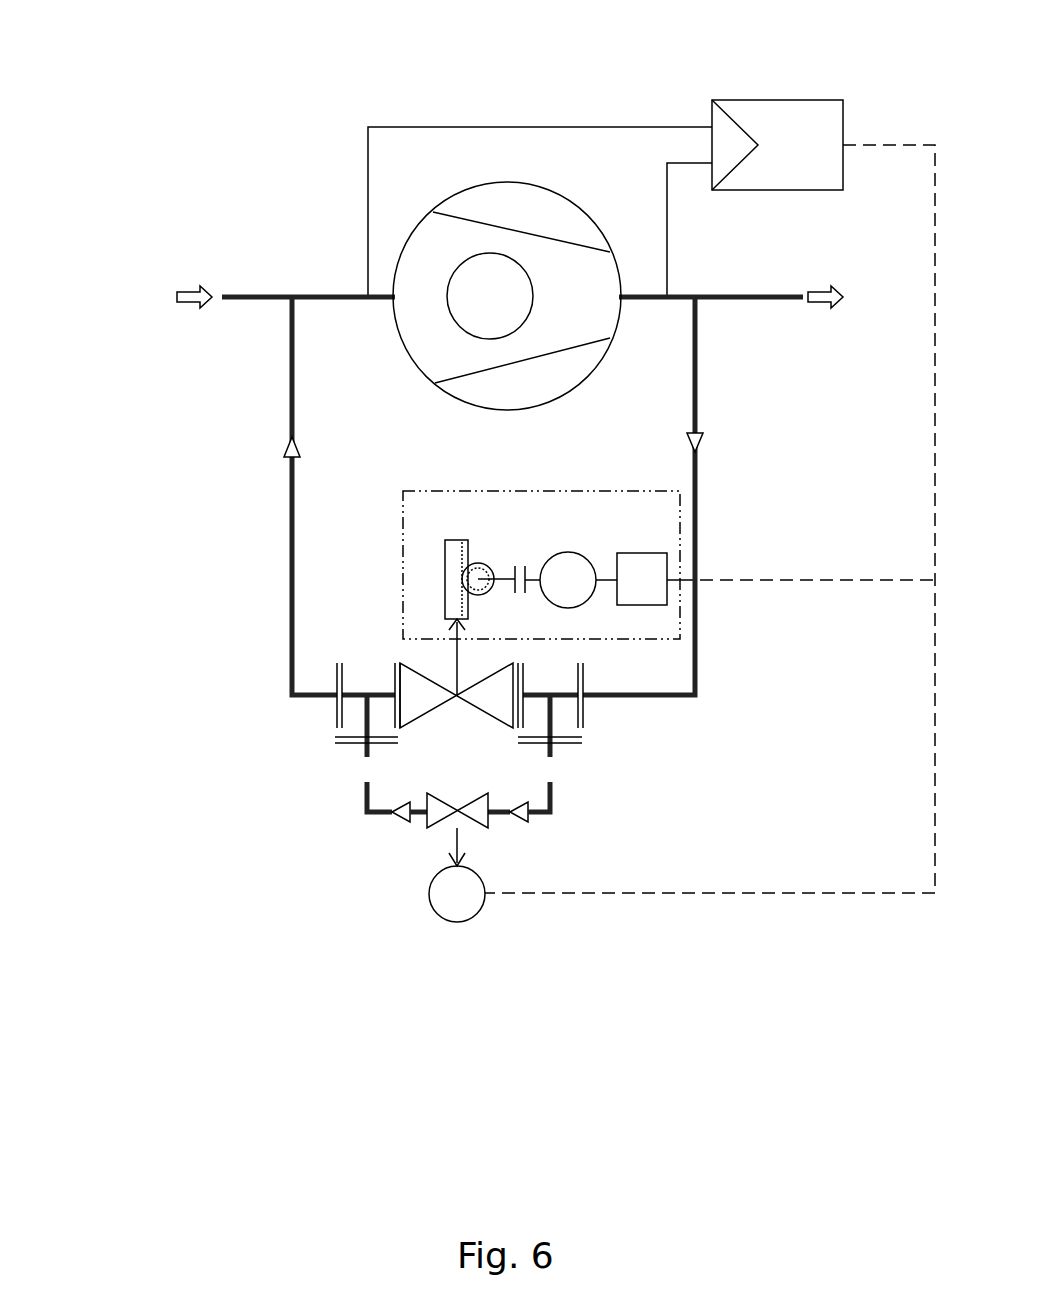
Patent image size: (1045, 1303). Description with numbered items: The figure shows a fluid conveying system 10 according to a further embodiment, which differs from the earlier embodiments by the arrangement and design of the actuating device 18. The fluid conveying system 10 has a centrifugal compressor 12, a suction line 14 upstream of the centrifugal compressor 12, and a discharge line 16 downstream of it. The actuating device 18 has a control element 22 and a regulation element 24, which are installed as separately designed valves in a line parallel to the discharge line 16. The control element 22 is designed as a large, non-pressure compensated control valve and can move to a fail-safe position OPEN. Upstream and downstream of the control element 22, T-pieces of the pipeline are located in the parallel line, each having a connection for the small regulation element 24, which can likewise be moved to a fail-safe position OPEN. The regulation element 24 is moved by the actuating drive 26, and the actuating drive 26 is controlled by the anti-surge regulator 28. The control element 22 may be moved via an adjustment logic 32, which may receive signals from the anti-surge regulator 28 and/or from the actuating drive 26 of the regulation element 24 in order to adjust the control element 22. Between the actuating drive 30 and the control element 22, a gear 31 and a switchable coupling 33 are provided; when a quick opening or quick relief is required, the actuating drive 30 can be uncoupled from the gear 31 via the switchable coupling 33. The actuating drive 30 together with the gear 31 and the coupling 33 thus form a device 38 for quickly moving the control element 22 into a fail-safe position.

The fluid conveying system 10 is at (180, 130).
The centrifugal compressor 12 is at (422, 337).
The suction line 14 is at (246, 292).
The discharge line 16 is at (748, 293).
The actuating device 18 is at (228, 791).
The control element 22 is at (430, 672).
The regulation element 24 is at (413, 833).
The actuating drive 26 is at (453, 897).
The anti-surge regulator 28 is at (768, 117).
The actuating drive 30 is at (558, 583).
The gear 31 is at (472, 528).
The adjustment logic 32 is at (628, 598).
The switchable coupling 33 is at (523, 550).
The device for quickly moving the control element 38 is at (553, 490).